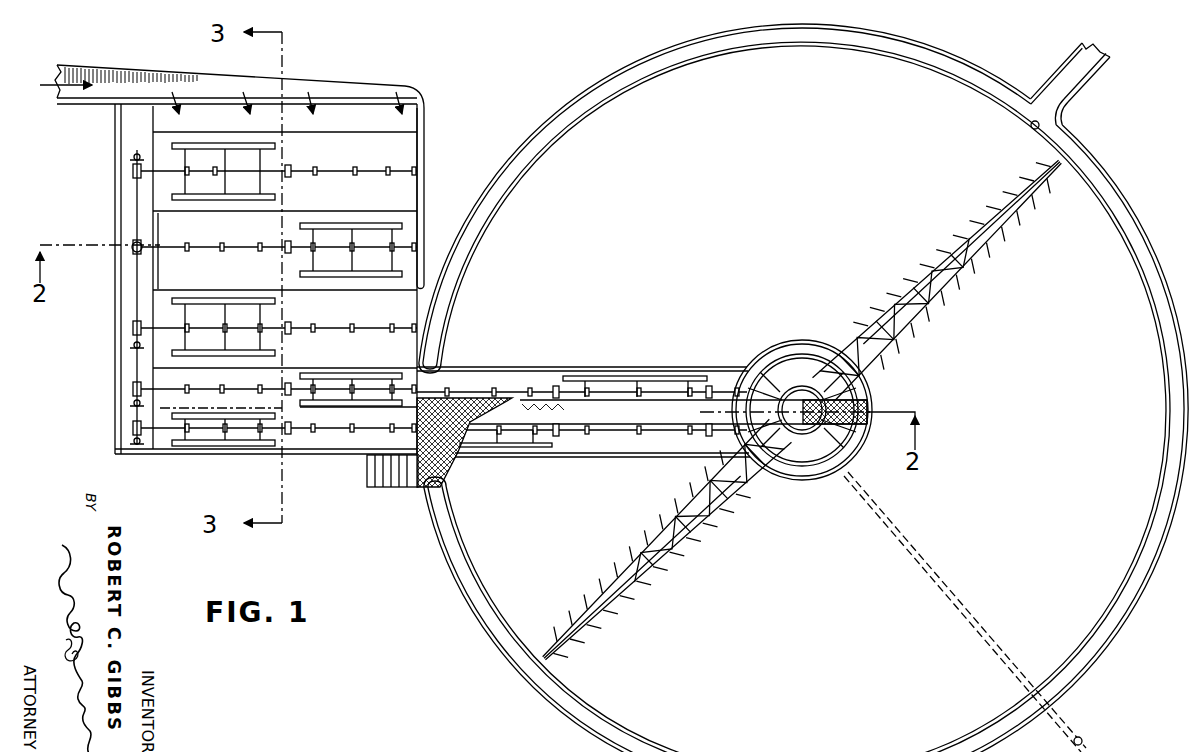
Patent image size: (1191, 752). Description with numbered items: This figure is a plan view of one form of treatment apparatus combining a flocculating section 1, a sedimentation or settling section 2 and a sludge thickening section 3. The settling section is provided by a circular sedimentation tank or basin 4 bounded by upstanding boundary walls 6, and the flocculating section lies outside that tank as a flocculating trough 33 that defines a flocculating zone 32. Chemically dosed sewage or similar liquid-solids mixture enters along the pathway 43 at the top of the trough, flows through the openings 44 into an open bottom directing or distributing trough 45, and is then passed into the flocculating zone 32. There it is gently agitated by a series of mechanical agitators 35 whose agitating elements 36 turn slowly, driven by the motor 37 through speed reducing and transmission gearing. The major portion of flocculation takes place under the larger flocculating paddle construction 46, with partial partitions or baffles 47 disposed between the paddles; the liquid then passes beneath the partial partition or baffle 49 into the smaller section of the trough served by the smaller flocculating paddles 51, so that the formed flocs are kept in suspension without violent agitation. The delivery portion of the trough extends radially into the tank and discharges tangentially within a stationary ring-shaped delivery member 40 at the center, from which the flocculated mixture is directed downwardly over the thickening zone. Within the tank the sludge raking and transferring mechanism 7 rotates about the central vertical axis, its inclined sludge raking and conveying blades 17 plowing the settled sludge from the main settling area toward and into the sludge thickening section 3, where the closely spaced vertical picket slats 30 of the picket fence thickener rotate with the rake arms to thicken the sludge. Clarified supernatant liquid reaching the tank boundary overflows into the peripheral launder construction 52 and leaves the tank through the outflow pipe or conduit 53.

The flocculating section 1 is at (216, 251).
The sedimentation or settling section 2 is at (725, 198).
The sludge thickening section 3 is at (793, 341).
The sedimentation tank or basin 4 is at (965, 612).
The upstanding boundary walls 6 is at (1168, 436).
The sludge raking and transferring mechanism 7 is at (878, 343).
The sludge raking and conveying blades 17 is at (928, 258).
The picket slats 30 is at (260, 279).
The flocculating zone or space 32 is at (261, 271).
The flocculating trough 33 is at (417, 148).
The mechanical agitators 35 is at (223, 333).
The mechanical agitating elements 36 is at (275, 146).
The motor 37 is at (130, 243).
The stationary ring-shaped delivery member 40 is at (815, 480).
The pathway 43 is at (232, 177).
The openings 44 is at (248, 108).
The open bottom directing or distributing trough 45 is at (285, 120).
The larger flocculating paddle construction 46 is at (266, 165).
The partial partitions or baffles 47 is at (404, 211).
The partial partition or baffle 49 is at (344, 369).
The smaller flocculating paddles 51 is at (252, 390).
The peripheral launder construction 52 is at (1103, 198).
The outflow pipe or conduit 53 is at (1075, 90).